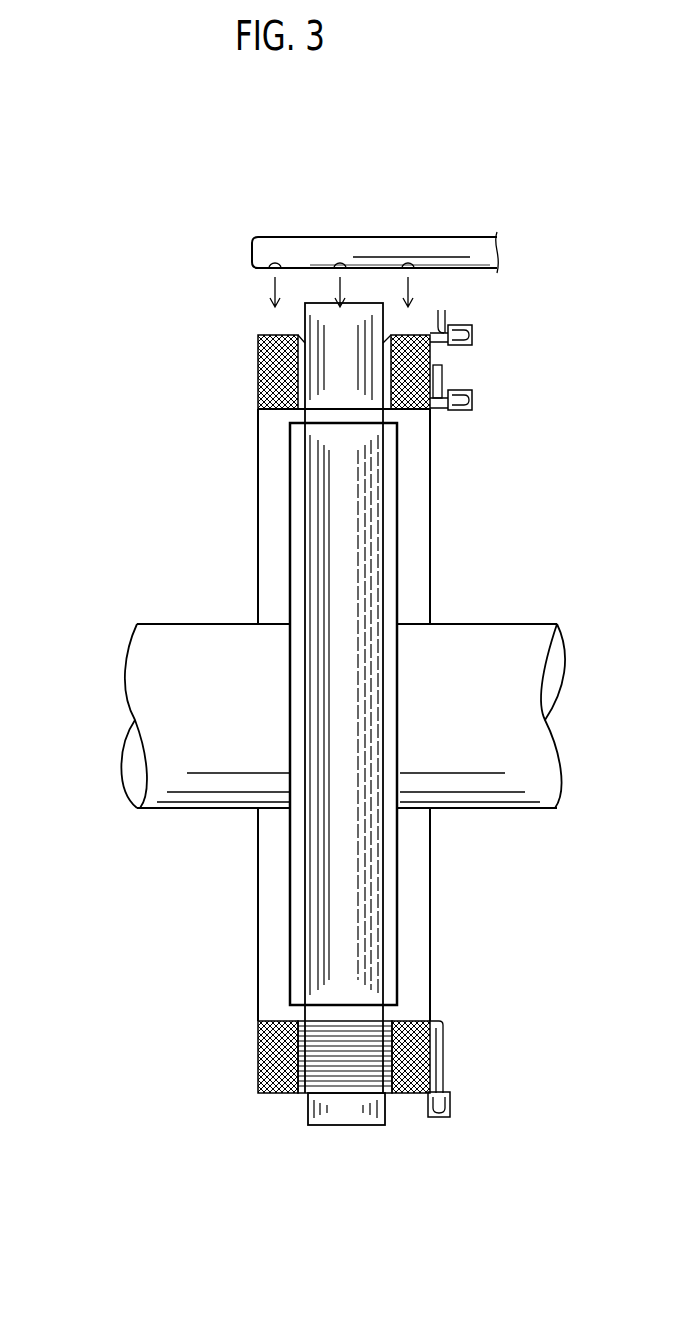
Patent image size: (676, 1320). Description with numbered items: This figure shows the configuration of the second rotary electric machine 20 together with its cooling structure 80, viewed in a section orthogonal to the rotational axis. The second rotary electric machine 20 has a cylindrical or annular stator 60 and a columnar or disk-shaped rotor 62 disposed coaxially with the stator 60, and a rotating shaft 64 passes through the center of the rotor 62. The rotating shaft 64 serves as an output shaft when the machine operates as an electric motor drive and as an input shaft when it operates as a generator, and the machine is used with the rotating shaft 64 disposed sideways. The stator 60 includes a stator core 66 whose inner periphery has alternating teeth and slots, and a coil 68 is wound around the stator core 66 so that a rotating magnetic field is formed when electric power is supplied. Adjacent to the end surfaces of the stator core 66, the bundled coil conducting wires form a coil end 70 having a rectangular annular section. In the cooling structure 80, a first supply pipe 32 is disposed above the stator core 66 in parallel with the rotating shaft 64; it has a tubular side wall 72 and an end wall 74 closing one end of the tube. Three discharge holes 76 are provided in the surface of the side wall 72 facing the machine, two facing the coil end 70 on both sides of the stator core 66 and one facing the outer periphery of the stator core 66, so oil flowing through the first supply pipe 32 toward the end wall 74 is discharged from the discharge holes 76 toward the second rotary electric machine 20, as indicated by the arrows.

The second rotary electric machine 20 is at (140, 333).
The cooling structure 80 is at (203, 170).
The first supply pipe 32 is at (293, 235).
The side wall 72 is at (430, 237).
The end wall 74 is at (252, 258).
The discharge hole 76 is at (340, 265).
The stator 60 is at (265, 1117).
The rotor 62 is at (290, 920).
The rotating shaft 64 is at (210, 800).
The coil end 70 is at (260, 1057).
The coil 68 is at (407, 1100).
The stator core 66 is at (345, 1115).